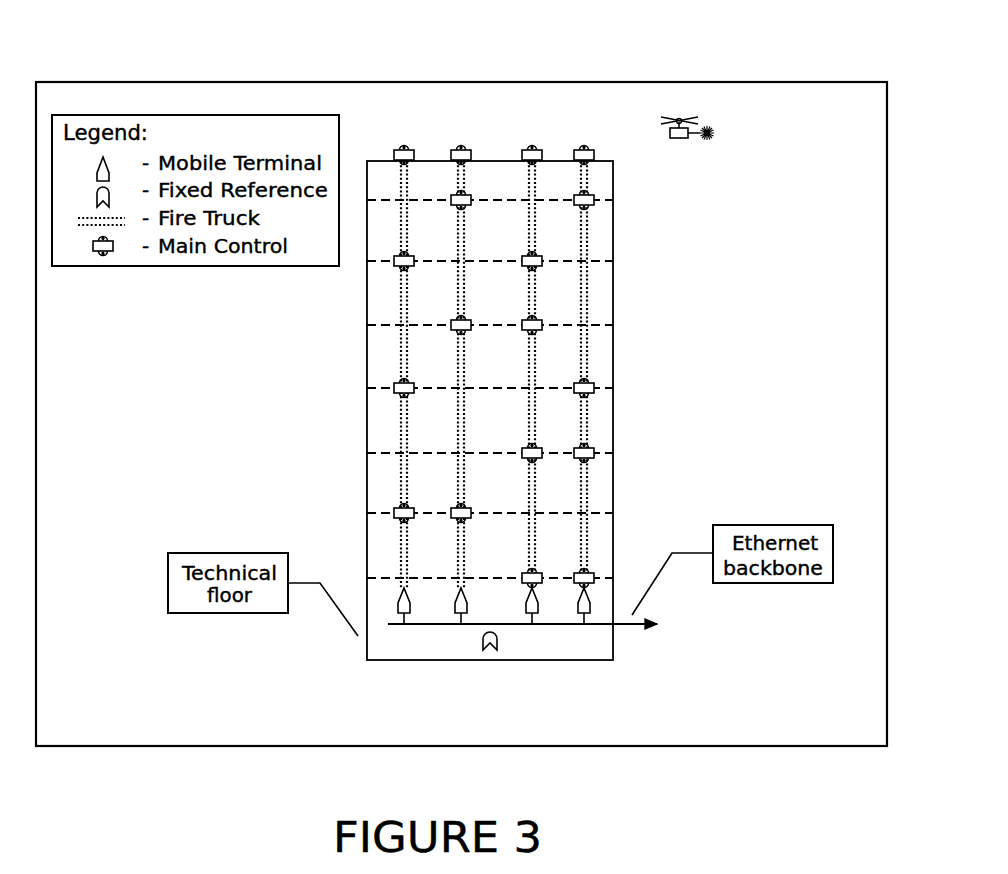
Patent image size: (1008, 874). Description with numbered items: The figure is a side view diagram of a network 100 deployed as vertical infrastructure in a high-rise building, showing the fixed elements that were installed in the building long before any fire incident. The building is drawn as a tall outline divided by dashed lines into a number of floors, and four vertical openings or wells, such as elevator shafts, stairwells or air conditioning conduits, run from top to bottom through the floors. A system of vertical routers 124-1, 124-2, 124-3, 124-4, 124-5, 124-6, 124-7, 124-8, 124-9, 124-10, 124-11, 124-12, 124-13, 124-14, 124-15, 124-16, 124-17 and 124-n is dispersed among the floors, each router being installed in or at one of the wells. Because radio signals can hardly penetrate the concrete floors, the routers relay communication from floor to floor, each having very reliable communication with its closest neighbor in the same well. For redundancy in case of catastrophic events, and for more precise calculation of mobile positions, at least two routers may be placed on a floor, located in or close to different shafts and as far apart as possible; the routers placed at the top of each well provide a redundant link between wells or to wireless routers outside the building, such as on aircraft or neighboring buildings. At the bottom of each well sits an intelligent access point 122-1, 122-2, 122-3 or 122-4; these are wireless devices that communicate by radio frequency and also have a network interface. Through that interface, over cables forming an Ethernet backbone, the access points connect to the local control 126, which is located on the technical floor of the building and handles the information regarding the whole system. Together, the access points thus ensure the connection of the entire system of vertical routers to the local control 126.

The fire scene communication system 100 is at (636, 55).
The intelligent access point 122-1 is at (397, 606).
The intelligent access point 122-2 is at (458, 607).
The intelligent access point 122-3 is at (537, 607).
The intelligent access point 122-4 is at (598, 606).
The vertical router 124-1 is at (402, 148).
The vertical router 124-2 is at (460, 150).
The vertical router 124-3 is at (528, 148).
The vertical router 124-4 is at (584, 150).
The vertical router 124-5 is at (456, 198).
The vertical router 124-6 is at (579, 198).
The vertical router 124-7 is at (438, 244).
The vertical router 124-8 is at (526, 258).
The vertical router 124-9 is at (456, 322).
The vertical router 124-10 is at (526, 322).
The vertical router 124-11 is at (437, 369).
The vertical router 124-12 is at (594, 385).
The vertical router 124-13 is at (526, 450).
The vertical router 124-14 is at (594, 448).
The vertical router 124-15 is at (400, 505).
The vertical router 124-16 is at (497, 493).
The vertical router 124-17 is at (526, 575).
The vertical router 124-n is at (579, 575).
The local control 126 is at (490, 650).